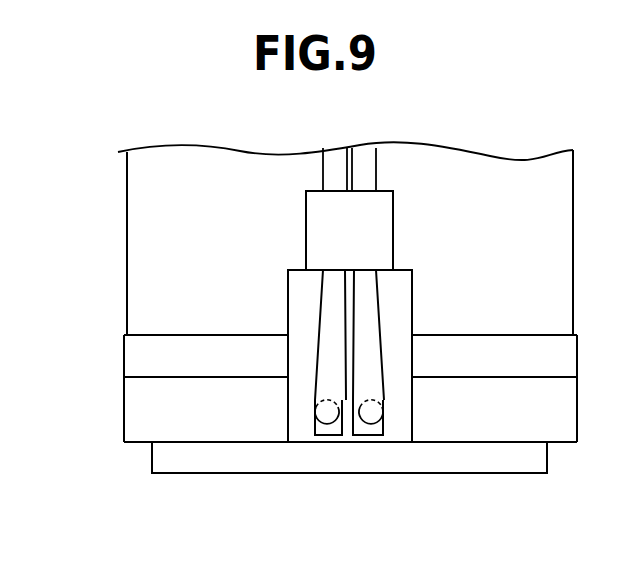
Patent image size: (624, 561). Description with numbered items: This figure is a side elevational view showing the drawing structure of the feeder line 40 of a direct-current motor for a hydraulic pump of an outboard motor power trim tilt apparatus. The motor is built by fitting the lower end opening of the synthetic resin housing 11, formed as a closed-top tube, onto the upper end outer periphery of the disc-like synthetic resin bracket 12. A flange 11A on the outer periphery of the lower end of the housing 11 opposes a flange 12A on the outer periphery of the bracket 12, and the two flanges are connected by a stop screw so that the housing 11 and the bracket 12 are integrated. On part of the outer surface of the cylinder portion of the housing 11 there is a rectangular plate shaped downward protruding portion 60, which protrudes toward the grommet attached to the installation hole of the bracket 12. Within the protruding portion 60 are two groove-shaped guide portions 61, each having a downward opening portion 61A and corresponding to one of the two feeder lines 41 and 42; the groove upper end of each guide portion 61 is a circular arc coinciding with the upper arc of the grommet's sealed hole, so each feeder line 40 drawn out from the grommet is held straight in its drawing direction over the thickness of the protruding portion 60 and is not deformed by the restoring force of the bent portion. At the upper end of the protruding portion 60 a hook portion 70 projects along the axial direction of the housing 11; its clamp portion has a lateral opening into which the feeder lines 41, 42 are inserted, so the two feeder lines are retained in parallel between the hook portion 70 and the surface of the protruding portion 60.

The housing 11 is at (148, 217).
The flange 11A is at (130, 356).
The bracket 12 is at (116, 433).
The flange 12A is at (130, 396).
The feeder line 40 is at (349, 407).
The feeder line 41 is at (328, 327).
The feeder line 42 is at (370, 320).
The protruding portion 60 is at (420, 397).
The guide portion 61 is at (358, 472).
The downward opening portion 61A is at (315, 430).
The hook portion 70 is at (402, 220).